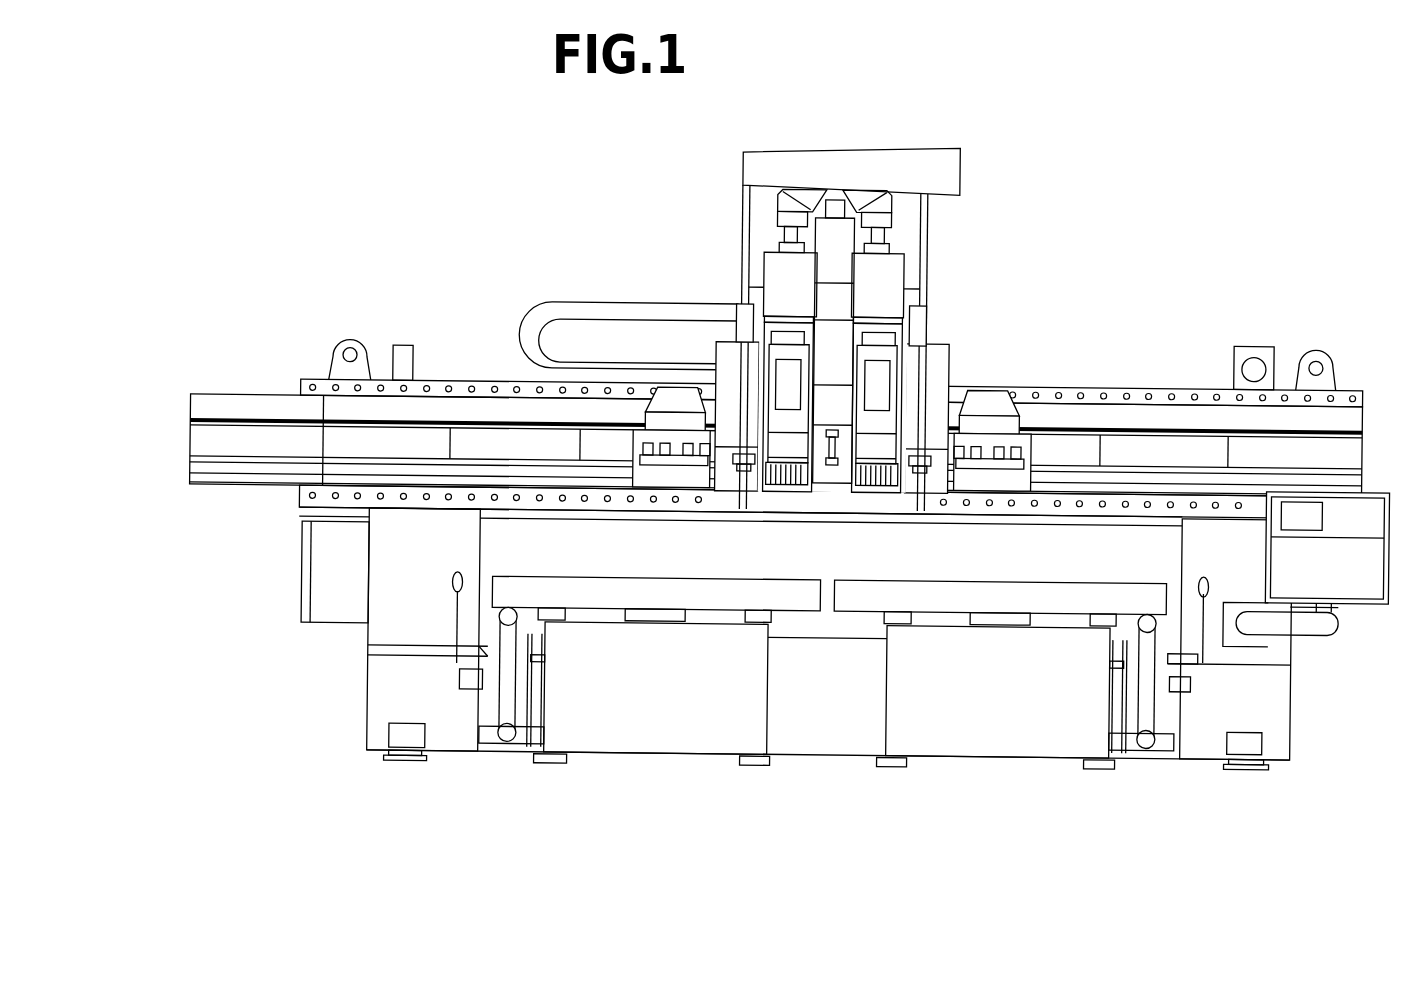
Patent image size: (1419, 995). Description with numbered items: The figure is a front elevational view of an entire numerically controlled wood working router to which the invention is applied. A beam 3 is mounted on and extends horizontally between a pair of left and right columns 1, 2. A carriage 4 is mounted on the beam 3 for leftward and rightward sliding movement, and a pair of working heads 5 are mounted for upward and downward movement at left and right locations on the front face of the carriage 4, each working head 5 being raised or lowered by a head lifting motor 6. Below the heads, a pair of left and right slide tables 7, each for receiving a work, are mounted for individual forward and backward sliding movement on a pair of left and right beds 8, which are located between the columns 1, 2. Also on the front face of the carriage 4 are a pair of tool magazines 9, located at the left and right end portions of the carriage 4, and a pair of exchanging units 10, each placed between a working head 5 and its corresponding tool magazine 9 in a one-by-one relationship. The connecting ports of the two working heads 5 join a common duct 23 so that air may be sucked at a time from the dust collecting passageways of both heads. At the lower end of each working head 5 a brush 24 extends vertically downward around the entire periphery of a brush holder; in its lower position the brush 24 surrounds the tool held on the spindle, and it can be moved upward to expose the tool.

The left column 1 is at (400, 611).
The right column 2 is at (1240, 573).
The beam 3 is at (463, 385).
The carriage 4 is at (843, 526).
The working head 5 is at (768, 342).
The head lifting motor 6 is at (768, 272).
The slide table 7 is at (604, 599).
The bed 8 is at (730, 729).
The tool magazine 9 is at (650, 390).
The exchanging unit 10 is at (713, 367).
The common duct 23 is at (862, 162).
The brush 24 is at (773, 490).